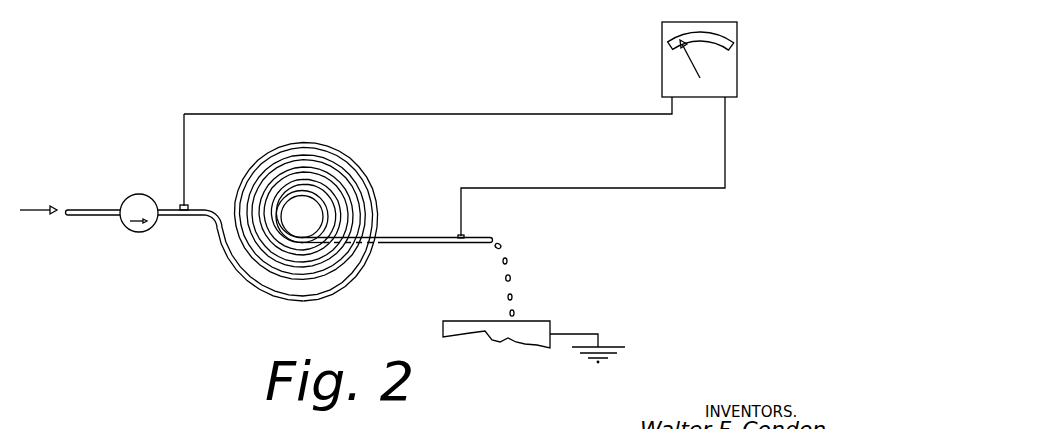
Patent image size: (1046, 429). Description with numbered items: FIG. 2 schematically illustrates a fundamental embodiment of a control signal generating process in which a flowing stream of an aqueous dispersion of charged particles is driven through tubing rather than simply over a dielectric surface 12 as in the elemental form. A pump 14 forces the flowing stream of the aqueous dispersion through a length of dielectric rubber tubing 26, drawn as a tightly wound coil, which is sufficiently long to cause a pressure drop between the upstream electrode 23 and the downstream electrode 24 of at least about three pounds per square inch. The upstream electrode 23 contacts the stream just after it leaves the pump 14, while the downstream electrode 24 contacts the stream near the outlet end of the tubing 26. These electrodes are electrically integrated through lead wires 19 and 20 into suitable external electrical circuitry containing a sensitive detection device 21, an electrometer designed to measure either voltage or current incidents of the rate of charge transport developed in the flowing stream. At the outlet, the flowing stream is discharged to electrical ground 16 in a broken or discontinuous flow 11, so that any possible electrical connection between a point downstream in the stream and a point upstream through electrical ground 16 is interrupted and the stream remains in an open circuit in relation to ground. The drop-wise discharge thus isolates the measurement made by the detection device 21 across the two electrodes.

The discontinuous flow 11 is at (513, 277).
The dielectric surface 12 is at (260, 298).
The pump 14 is at (137, 232).
The electrical ground 16 is at (528, 322).
The lead wire 19 is at (725, 147).
The lead wire 20 is at (543, 113).
The detection device 21 is at (740, 63).
The upstream electrode 23 is at (181, 204).
The downstream electrode 24 is at (463, 238).
The dielectric rubber tubing 26 is at (350, 167).